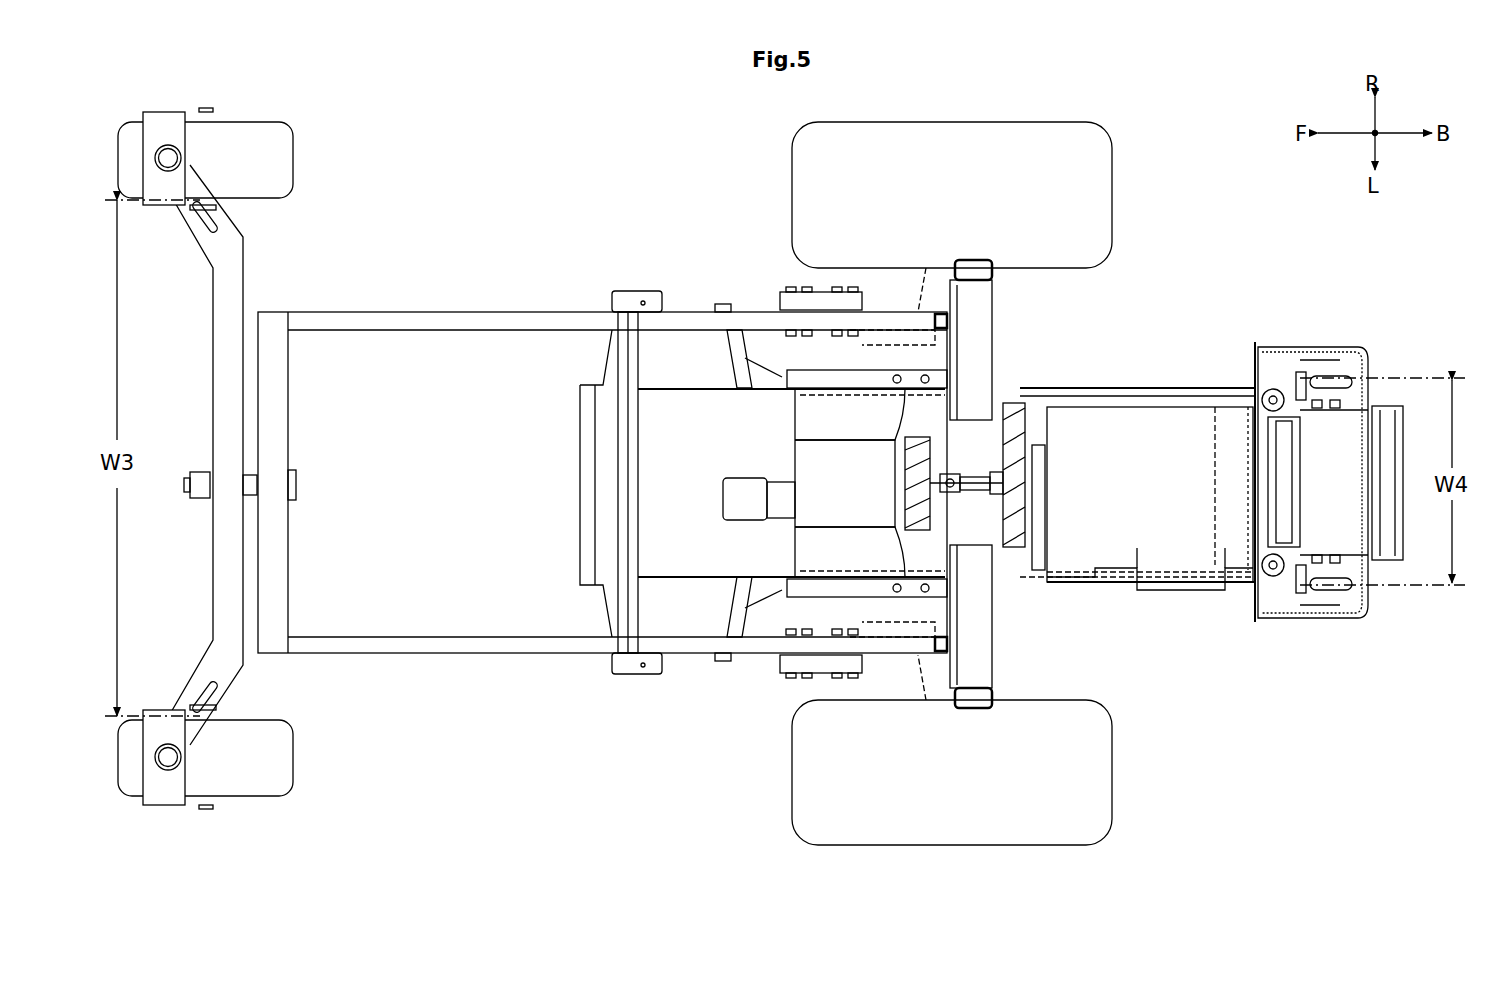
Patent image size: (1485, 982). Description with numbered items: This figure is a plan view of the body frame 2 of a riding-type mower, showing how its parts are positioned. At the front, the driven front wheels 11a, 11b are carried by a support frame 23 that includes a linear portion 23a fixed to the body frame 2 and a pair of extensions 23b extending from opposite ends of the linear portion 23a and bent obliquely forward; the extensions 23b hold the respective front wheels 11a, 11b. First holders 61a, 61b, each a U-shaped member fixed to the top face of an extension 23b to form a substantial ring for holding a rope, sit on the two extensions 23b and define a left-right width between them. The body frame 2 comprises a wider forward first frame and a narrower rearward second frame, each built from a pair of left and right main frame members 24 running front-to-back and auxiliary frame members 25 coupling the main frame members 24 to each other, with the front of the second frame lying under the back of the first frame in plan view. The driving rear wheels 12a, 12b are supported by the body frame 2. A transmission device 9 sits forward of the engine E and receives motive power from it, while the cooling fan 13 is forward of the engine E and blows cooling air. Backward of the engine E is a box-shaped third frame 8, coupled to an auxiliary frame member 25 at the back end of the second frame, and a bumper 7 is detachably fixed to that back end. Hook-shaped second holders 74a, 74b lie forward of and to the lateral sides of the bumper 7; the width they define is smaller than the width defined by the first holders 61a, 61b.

The body frame 2 is at (548, 226).
The front wheel 11a is at (262, 782).
The front wheel 11b is at (262, 132).
The rear wheel 12a is at (1073, 830).
The rear wheel 12b is at (1072, 134).
The cooling fan 13 is at (1020, 430).
The support frame 23 is at (222, 458).
The linear portion 23a is at (216, 540).
The extension 23b is at (205, 170).
The main frame member 24 is at (1142, 643).
The auxiliary frame member 25 is at (283, 578).
The first holder 61a is at (176, 669).
The first holder 61b is at (196, 220).
The bumper 7 is at (1398, 462).
The third frame 8 is at (1312, 620).
The transmission device 9 is at (805, 555).
The second holder 74a is at (1340, 592).
The second holder 74b is at (1335, 380).
The engine E is at (1170, 410).